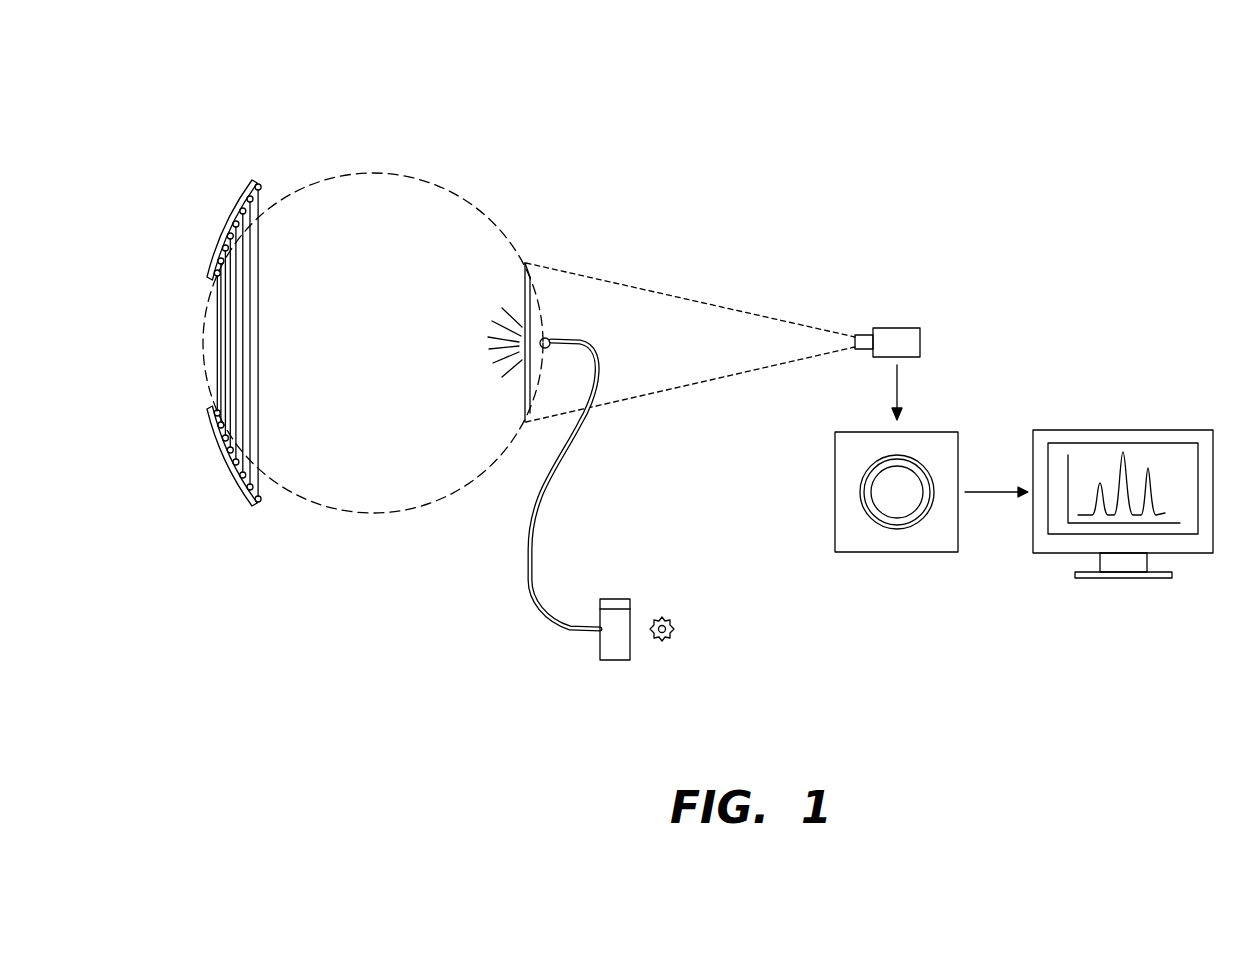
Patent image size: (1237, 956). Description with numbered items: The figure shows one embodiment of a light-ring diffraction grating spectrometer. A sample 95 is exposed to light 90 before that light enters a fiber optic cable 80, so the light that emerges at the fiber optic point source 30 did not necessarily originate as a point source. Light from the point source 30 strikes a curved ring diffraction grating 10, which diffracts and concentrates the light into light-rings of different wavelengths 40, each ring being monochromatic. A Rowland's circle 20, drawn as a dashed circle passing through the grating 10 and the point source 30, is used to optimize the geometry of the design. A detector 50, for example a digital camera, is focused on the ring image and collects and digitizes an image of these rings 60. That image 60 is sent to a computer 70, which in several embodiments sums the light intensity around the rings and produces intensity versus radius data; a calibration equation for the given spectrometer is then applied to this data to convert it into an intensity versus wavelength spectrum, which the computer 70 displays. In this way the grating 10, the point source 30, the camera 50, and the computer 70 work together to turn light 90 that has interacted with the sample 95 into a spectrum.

The diffraction grating 10 is at (233, 217).
The Rowland's circle 20 is at (375, 172).
The fiber optic point source 30 is at (550, 338).
The light-rings of different wavelengths 40 is at (527, 262).
The detector 50 is at (894, 330).
The image of the rings 60 is at (865, 545).
The computer 70 is at (1125, 432).
The fiber optic cable 80 is at (528, 553).
The light 90 is at (668, 615).
The sample 95 is at (614, 600).